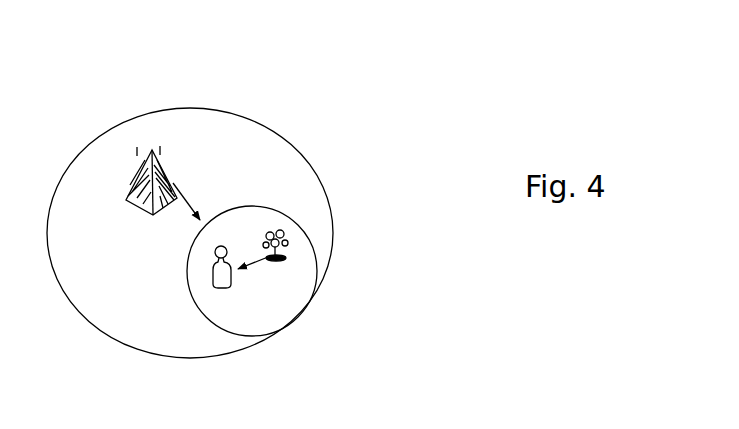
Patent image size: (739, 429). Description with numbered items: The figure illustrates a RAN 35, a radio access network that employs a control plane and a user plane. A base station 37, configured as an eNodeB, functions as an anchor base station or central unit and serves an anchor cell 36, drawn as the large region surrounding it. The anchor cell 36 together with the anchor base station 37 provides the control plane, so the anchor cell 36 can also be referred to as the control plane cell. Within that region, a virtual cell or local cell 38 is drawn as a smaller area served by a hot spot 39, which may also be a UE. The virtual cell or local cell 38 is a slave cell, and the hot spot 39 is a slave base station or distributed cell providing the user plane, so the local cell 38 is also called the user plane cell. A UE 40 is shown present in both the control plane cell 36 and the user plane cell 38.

The RAN 35 is at (436, 95).
The anchor cell 36 is at (265, 122).
The base station 37 is at (173, 185).
The virtual cell or local cell 38 is at (315, 245).
The hot spot 39 is at (278, 259).
The UE 40 is at (218, 287).